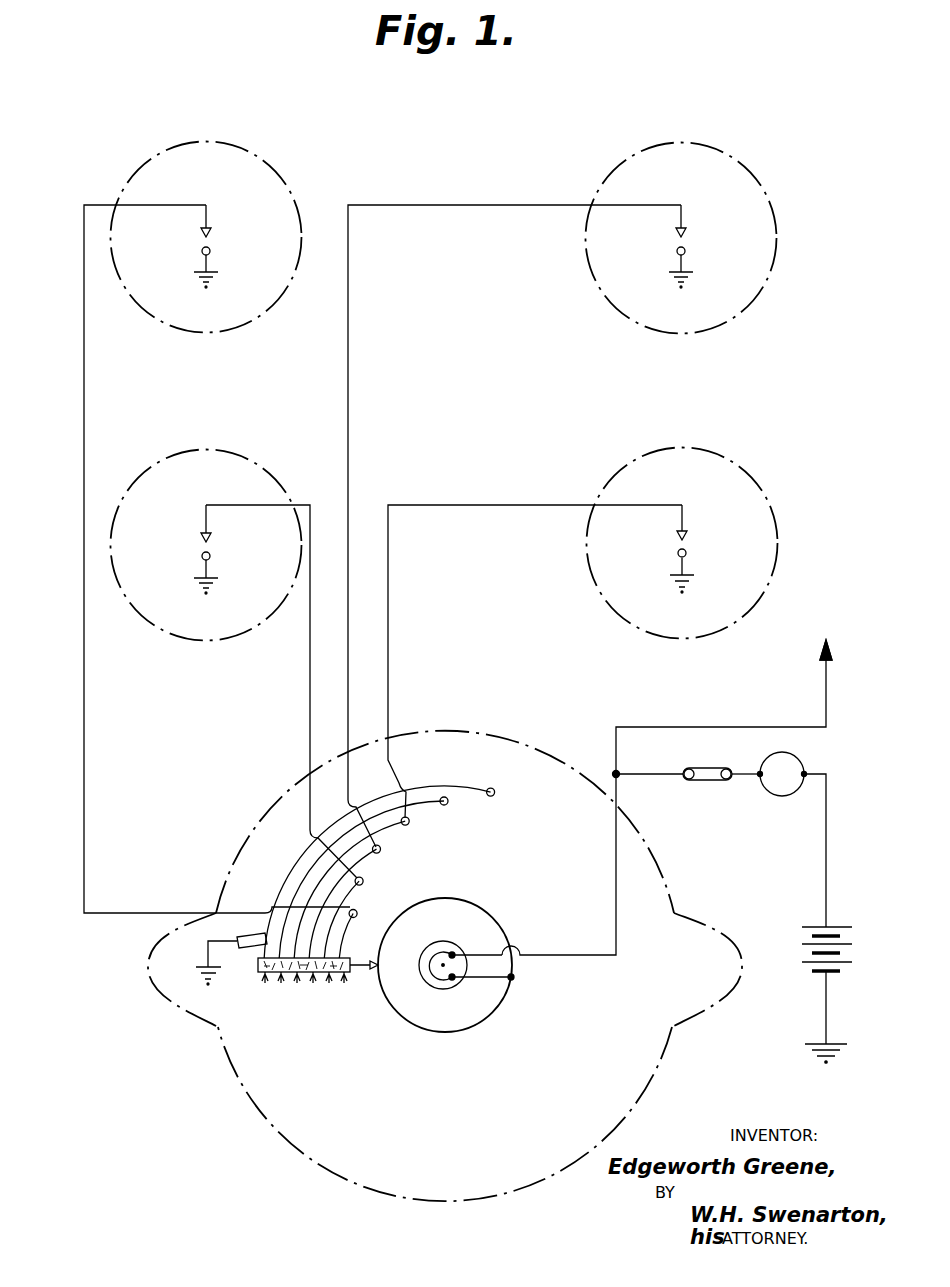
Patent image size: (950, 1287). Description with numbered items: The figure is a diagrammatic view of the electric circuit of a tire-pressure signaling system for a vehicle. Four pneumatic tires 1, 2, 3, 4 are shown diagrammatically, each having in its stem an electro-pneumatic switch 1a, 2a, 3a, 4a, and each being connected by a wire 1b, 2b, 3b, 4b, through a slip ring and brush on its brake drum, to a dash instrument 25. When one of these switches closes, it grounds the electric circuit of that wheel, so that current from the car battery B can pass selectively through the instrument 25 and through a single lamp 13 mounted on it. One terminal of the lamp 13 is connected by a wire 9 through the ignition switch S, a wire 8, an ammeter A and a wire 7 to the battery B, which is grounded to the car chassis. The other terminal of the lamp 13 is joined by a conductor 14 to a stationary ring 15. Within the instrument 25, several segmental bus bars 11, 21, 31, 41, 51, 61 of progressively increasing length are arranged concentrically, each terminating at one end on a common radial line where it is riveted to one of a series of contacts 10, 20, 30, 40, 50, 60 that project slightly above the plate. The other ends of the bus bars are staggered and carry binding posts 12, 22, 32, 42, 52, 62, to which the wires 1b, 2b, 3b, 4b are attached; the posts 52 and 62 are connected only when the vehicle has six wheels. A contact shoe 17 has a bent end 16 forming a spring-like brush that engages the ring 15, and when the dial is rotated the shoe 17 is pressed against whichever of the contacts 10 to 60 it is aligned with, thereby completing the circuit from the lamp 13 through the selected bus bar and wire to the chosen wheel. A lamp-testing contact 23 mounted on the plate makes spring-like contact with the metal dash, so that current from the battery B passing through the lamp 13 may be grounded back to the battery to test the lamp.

The pneumatic tire 1 is at (206, 141).
The pneumatic tire 2 is at (206, 450).
The pneumatic tire 3 is at (681, 143).
The pneumatic tire 4 is at (682, 448).
The electro-pneumatic switch 1a is at (213, 239).
The electro-pneumatic switch 2a is at (199, 546).
The electro-pneumatic switch 3a is at (688, 239).
The electro-pneumatic switch 4a is at (689, 546).
The wire 1b is at (83, 606).
The wire 2b is at (308, 693).
The wire 3b is at (350, 373).
The wire 4b is at (389, 626).
The wire 7 is at (824, 858).
The wire 8 is at (746, 778).
The wire 9 is at (661, 777).
The contact 10 is at (344, 983).
The segmental bus bar 11 is at (346, 941).
The binding post 12 is at (357, 914).
The lamp 13 is at (438, 991).
The conductor 14 is at (474, 979).
The stationary ring 15 is at (457, 1033).
The bent end 16 is at (373, 975).
The contact shoe 17 is at (258, 972).
The contact 20 is at (328, 984).
The segmental bus bar 21 is at (350, 894).
The binding post 22 is at (363, 881).
The lamp-testing contact 23 is at (240, 935).
The dash instrument 25 is at (250, 1110).
The contact 30 is at (313, 983).
The segmental bus bar 31 is at (372, 858).
The binding post 32 is at (381, 850).
The contact 40 is at (296, 984).
The segmental bus bar 41 is at (393, 828).
The binding post 42 is at (409, 822).
The contact 50 is at (281, 983).
The segmental bus bar 51 is at (446, 808).
The binding post 52 is at (448, 802).
The contact 60 is at (264, 984).
The segmental bus bar 61 is at (483, 790).
The binding post 62 is at (495, 793).
The ignition switch S is at (707, 789).
The ammeter A is at (782, 774).
The battery B is at (800, 948).